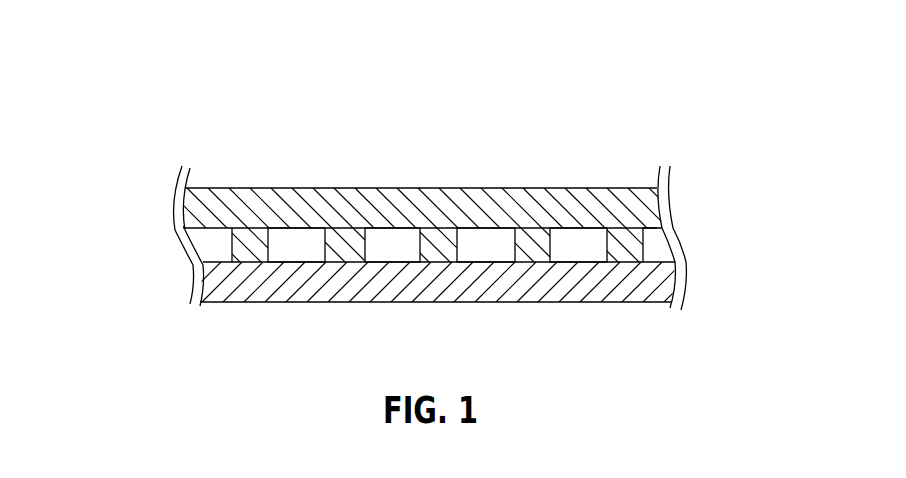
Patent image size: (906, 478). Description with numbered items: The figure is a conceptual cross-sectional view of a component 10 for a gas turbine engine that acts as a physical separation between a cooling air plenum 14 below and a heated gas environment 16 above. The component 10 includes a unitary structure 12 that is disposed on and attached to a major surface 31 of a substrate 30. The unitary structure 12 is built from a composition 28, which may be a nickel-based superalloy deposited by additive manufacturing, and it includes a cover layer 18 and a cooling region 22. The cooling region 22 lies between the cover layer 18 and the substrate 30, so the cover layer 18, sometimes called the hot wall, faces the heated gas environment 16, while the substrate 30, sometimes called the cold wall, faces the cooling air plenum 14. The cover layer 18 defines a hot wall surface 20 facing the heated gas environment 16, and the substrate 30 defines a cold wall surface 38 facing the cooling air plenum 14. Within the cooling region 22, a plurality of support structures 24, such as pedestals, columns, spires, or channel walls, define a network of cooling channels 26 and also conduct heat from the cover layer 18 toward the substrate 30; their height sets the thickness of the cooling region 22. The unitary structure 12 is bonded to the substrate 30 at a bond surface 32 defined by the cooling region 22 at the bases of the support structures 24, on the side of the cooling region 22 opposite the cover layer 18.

The component 10 is at (124, 66).
The unitary structure 12 is at (157, 190).
The cooling air plenum 14 is at (438, 360).
The heated gas environment 16 is at (456, 108).
The cover layer 18 is at (708, 190).
The hot wall surface 20 is at (510, 188).
The cooling region 22 is at (708, 230).
The support structures 24 is at (345, 247).
The cooling channels 26 is at (402, 240).
The composition 28 is at (228, 210).
The substrate 30 is at (597, 287).
The major surface 31 is at (563, 250).
The bond surface 32 is at (445, 263).
The cold wall surface 38 is at (523, 302).